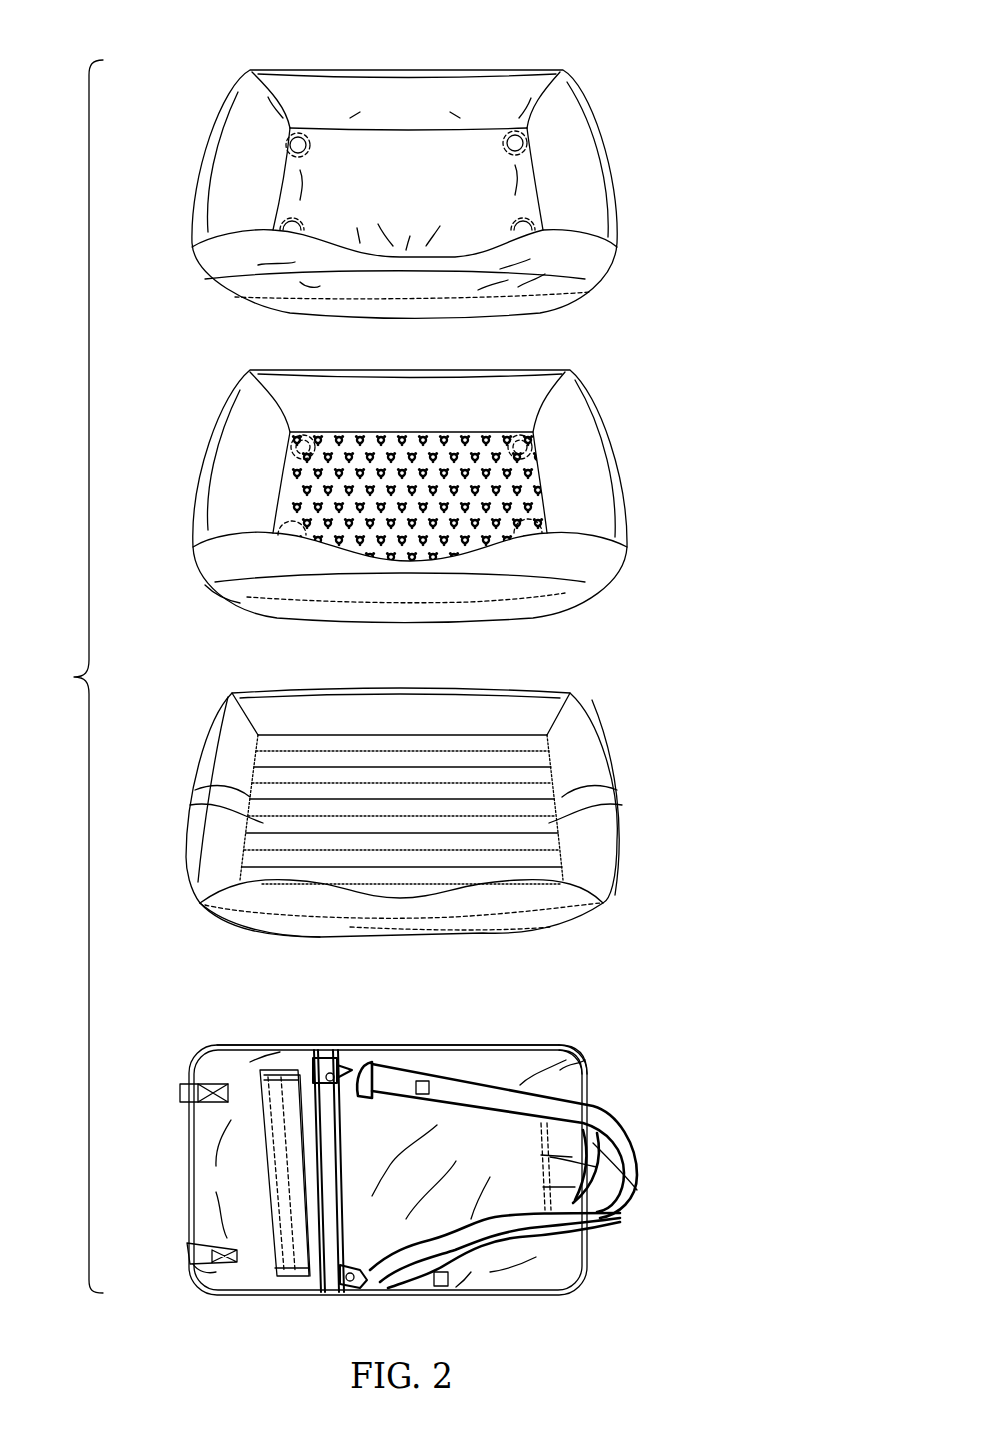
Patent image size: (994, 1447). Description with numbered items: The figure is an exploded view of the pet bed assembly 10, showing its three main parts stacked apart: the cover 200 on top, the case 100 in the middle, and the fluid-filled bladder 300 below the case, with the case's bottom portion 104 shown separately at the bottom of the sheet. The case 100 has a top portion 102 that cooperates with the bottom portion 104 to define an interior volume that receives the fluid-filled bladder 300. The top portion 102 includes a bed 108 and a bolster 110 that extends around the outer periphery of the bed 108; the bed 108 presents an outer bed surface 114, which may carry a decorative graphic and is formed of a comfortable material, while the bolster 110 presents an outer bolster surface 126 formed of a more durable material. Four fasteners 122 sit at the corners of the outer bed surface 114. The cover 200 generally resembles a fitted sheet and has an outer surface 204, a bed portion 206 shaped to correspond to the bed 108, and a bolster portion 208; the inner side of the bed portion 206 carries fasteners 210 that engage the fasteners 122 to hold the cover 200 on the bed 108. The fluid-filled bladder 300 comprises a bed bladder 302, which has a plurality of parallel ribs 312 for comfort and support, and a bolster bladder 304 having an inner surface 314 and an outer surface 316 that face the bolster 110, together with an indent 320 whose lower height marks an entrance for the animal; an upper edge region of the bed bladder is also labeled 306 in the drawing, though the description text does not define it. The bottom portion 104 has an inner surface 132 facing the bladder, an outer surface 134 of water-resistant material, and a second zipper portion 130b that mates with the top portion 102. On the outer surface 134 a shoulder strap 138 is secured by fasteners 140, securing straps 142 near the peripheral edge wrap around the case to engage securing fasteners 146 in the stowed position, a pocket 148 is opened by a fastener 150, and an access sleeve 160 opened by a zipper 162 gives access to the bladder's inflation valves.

The bed assembly 10 is at (72, 676).
The case 100 is at (185, 425).
The top portion 102 is at (185, 518).
The bottom portion 104 is at (185, 1200).
The bed 108 is at (343, 493).
The bolster 110 is at (587, 467).
The outer bed surface 114 is at (383, 447).
The fastener 122 is at (262, 382).
The outer bolster surface 126 is at (597, 500).
The second zipper portion 130b is at (553, 1045).
The inner surface 132 is at (490, 1045).
The outer surface 134 is at (572, 1074).
The shoulder strap 138 is at (630, 1143).
The fastener 140 is at (343, 1057).
The securing strap 142 is at (180, 1091).
The securing fastener 146 is at (423, 1080).
The pocket 148 is at (269, 1060).
The fastener 150 is at (277, 1135).
The access sleeve 160 is at (620, 1212).
The zipper 162 is at (637, 1185).
The cover 200 is at (185, 167).
The outer surface 204 is at (498, 88).
The bed portion 206 is at (508, 188).
The bolster portion 208 is at (257, 147).
The fastener 210 is at (310, 153).
The fluid-filled bladder 300 is at (183, 780).
The bed bladder 302 is at (273, 763).
The bolster bladder 304 is at (183, 866).
The top edge of cover 306 is at (353, 757).
The ribs 312 is at (295, 773).
The inner surface 314 is at (568, 745).
The outer surface 316 is at (597, 780).
The indent 320 is at (398, 903).